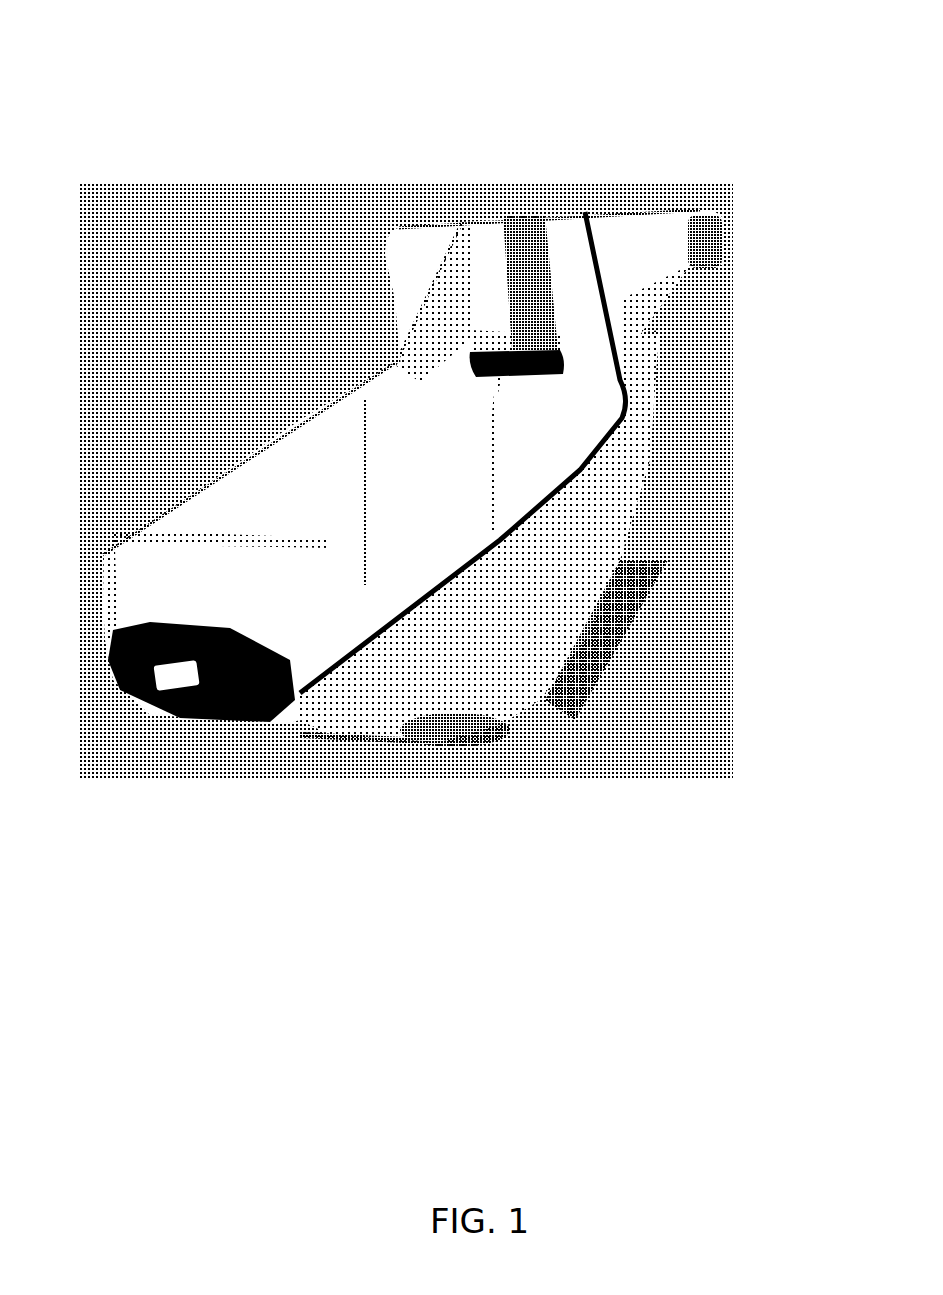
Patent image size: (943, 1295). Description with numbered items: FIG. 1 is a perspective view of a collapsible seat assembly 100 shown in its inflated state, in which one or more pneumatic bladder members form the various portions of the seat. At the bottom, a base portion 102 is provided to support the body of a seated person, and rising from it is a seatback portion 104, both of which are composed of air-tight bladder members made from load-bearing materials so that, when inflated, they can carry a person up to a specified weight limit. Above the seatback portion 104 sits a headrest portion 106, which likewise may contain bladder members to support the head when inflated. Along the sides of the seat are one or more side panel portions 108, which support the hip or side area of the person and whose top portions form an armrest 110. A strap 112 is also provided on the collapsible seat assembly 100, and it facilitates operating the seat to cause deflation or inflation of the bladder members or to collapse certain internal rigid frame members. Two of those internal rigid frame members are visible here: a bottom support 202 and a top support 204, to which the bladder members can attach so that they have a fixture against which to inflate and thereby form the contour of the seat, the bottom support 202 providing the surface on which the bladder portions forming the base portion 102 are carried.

The collapsible seat assembly 100 is at (166, 76).
The base portion 102 is at (258, 638).
The seatback portion 104 is at (590, 393).
The headrest portion 106 is at (410, 248).
The side panel portion 108 is at (247, 482).
The armrest 110 is at (205, 552).
The strap 112 is at (517, 222).
The bottom support 202 is at (445, 740).
The top support 204 is at (715, 235).